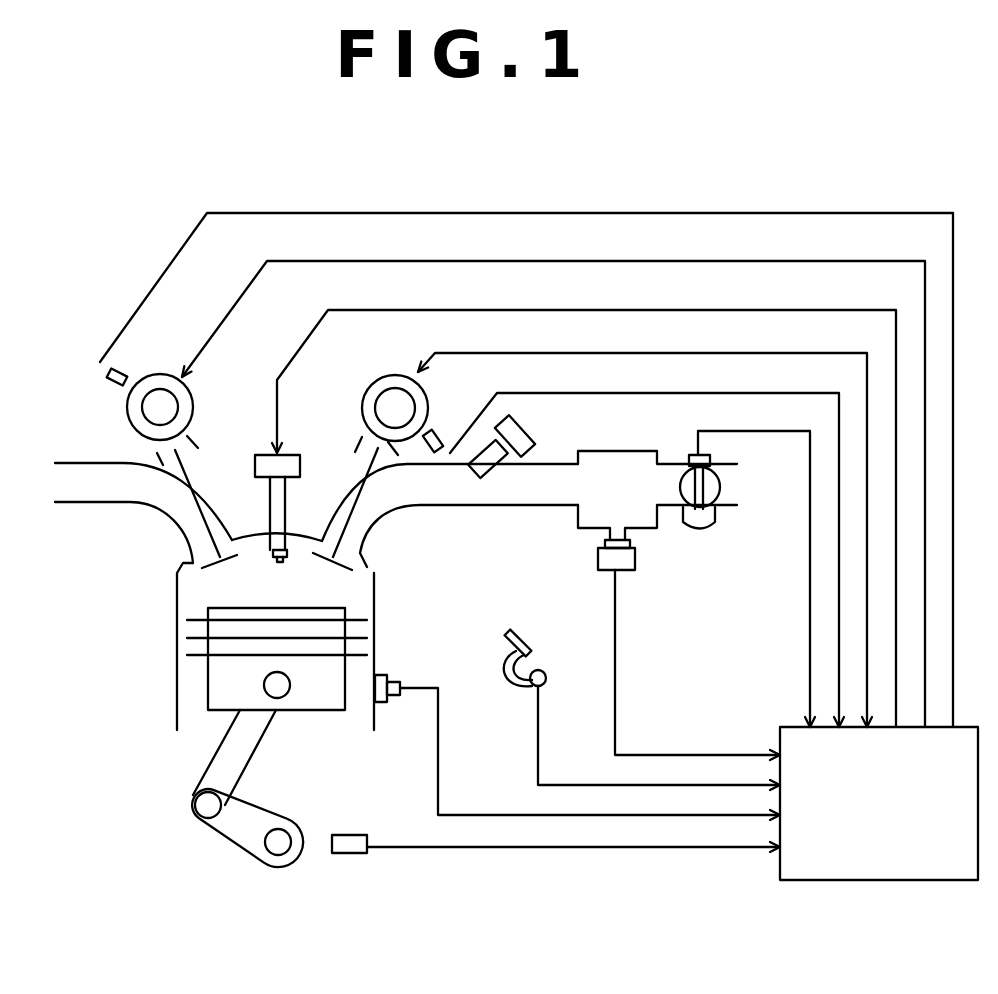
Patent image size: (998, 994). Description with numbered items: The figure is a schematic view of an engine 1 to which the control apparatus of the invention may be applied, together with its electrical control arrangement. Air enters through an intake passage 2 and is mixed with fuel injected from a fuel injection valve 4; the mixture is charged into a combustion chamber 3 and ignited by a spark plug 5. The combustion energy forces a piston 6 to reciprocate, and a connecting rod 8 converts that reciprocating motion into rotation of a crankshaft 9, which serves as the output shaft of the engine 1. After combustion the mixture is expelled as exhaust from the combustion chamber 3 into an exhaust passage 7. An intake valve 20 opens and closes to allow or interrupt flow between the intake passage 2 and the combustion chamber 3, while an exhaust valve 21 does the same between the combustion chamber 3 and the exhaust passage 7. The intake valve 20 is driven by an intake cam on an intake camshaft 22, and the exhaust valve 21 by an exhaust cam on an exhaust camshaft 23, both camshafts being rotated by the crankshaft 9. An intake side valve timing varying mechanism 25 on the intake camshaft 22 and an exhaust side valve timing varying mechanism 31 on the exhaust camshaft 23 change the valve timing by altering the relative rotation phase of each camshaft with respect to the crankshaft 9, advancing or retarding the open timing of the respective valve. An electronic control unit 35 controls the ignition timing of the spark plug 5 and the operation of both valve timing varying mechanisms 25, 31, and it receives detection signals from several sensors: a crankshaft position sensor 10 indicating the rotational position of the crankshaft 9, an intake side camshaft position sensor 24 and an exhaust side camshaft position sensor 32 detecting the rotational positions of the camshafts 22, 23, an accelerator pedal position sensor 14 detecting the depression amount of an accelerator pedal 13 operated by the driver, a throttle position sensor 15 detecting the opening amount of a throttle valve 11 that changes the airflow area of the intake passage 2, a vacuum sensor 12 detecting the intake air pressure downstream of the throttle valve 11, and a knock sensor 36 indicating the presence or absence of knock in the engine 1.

The engine 1 is at (132, 247).
The intake passage 2 is at (635, 453).
The combustion chamber 3 is at (200, 588).
The fuel injection valve 4 is at (532, 425).
The spark plug 5 is at (270, 508).
The piston 6 is at (325, 710).
The exhaust passage 7 is at (100, 500).
The connecting rod 8 is at (210, 770).
The crankshaft 9 is at (285, 830).
The crankshaft position sensor 10 is at (352, 832).
The throttle valve 11 is at (720, 487).
The vacuum sensor 12 is at (630, 572).
The accelerator pedal 13 is at (508, 633).
The accelerator pedal position sensor 14 is at (545, 667).
The throttle position sensor 15 is at (712, 460).
The intake valve 20 is at (340, 527).
The exhaust valve 21 is at (196, 535).
The intake camshaft 22 is at (375, 412).
The exhaust camshaft 23 is at (180, 407).
The intake side camshaft position sensor 24 is at (440, 432).
The intake side valve timing varying mechanism 25 is at (370, 382).
The exhaust side valve timing varying mechanism 31 is at (128, 423).
The exhaust side camshaft position sensor 32 is at (120, 372).
The electronic control unit 35 is at (775, 870).
The knock sensor 36 is at (385, 705).